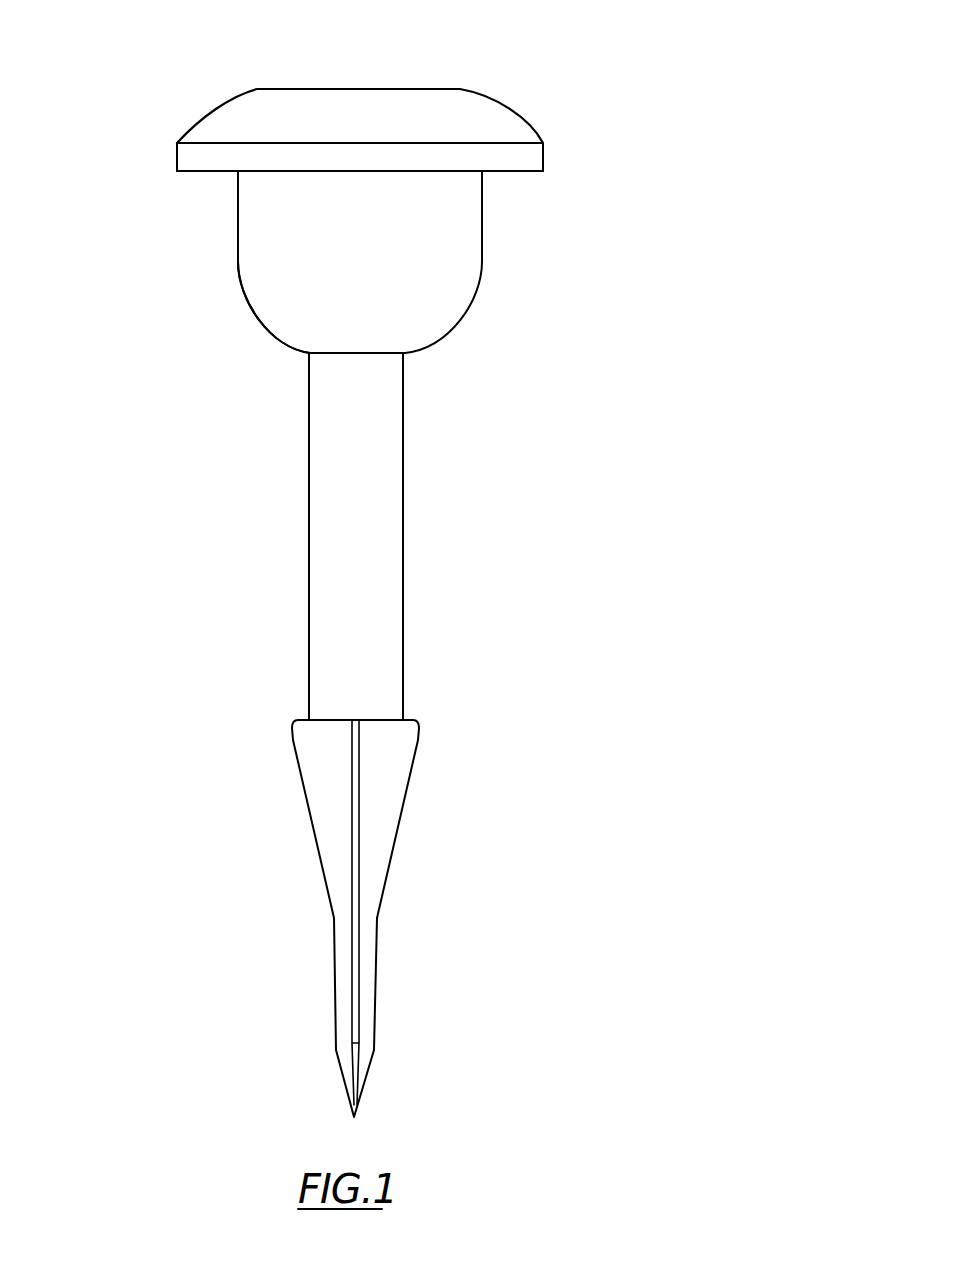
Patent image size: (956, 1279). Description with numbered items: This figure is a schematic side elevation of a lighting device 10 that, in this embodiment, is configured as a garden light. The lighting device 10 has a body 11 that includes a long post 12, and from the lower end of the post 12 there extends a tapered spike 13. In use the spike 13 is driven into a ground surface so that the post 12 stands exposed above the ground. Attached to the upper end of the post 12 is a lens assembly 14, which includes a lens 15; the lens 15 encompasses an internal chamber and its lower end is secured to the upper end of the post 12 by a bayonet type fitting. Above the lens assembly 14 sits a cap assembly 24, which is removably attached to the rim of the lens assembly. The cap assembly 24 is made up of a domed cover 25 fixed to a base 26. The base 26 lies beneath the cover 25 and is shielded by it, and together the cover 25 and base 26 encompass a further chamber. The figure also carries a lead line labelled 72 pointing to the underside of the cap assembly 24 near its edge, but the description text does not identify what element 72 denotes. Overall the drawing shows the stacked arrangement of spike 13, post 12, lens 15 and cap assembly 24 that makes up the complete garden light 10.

The lighting device 10 is at (555, 147).
The body 11 is at (408, 548).
The post 12 is at (325, 588).
The spike 13 is at (375, 852).
The lens assembly 14 is at (493, 287).
The lens 15 is at (248, 310).
The cap assembly 24 is at (494, 92).
The cover 25 is at (221, 100).
The base 26 is at (507, 172).
The rim of head 72 is at (205, 172).